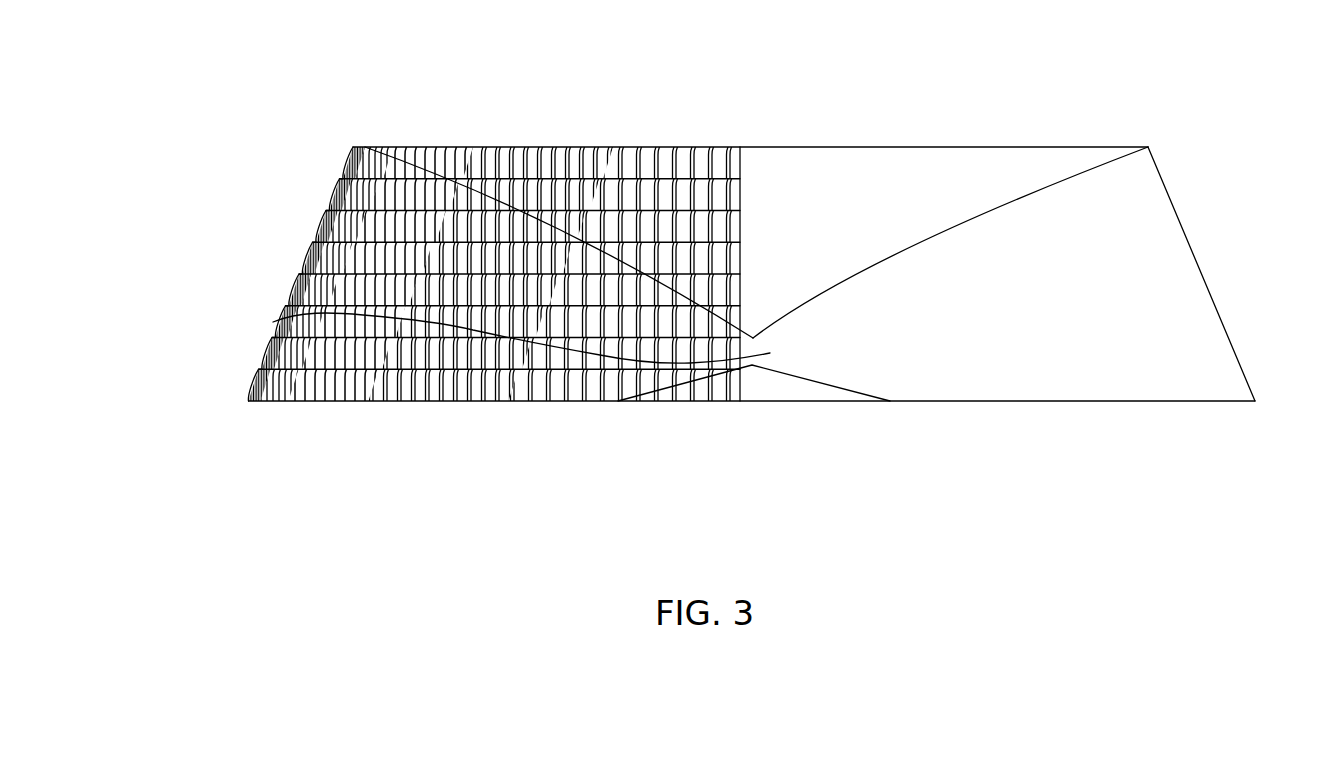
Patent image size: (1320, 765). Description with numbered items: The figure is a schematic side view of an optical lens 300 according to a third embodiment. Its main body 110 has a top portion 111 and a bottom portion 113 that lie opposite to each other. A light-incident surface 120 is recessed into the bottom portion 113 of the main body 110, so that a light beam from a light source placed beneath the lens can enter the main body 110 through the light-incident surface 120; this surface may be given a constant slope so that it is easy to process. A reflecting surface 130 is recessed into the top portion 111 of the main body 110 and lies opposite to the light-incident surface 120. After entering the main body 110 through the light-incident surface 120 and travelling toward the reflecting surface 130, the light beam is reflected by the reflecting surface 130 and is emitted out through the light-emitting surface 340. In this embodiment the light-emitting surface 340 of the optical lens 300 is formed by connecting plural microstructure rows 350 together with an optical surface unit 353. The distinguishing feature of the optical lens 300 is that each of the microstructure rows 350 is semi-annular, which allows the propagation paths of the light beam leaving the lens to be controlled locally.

The optical lens 300 is at (204, 101).
The main body 110 is at (1177, 288).
The top portion 111 is at (1105, 143).
The bottom portion 113 is at (1167, 405).
The light-incident surface 120 is at (812, 383).
The reflecting surface 130 is at (963, 227).
The light-emitting surface 340 is at (429, 274).
The microstructure rows 350 is at (300, 261).
The optical surface unit 353 is at (273, 322).